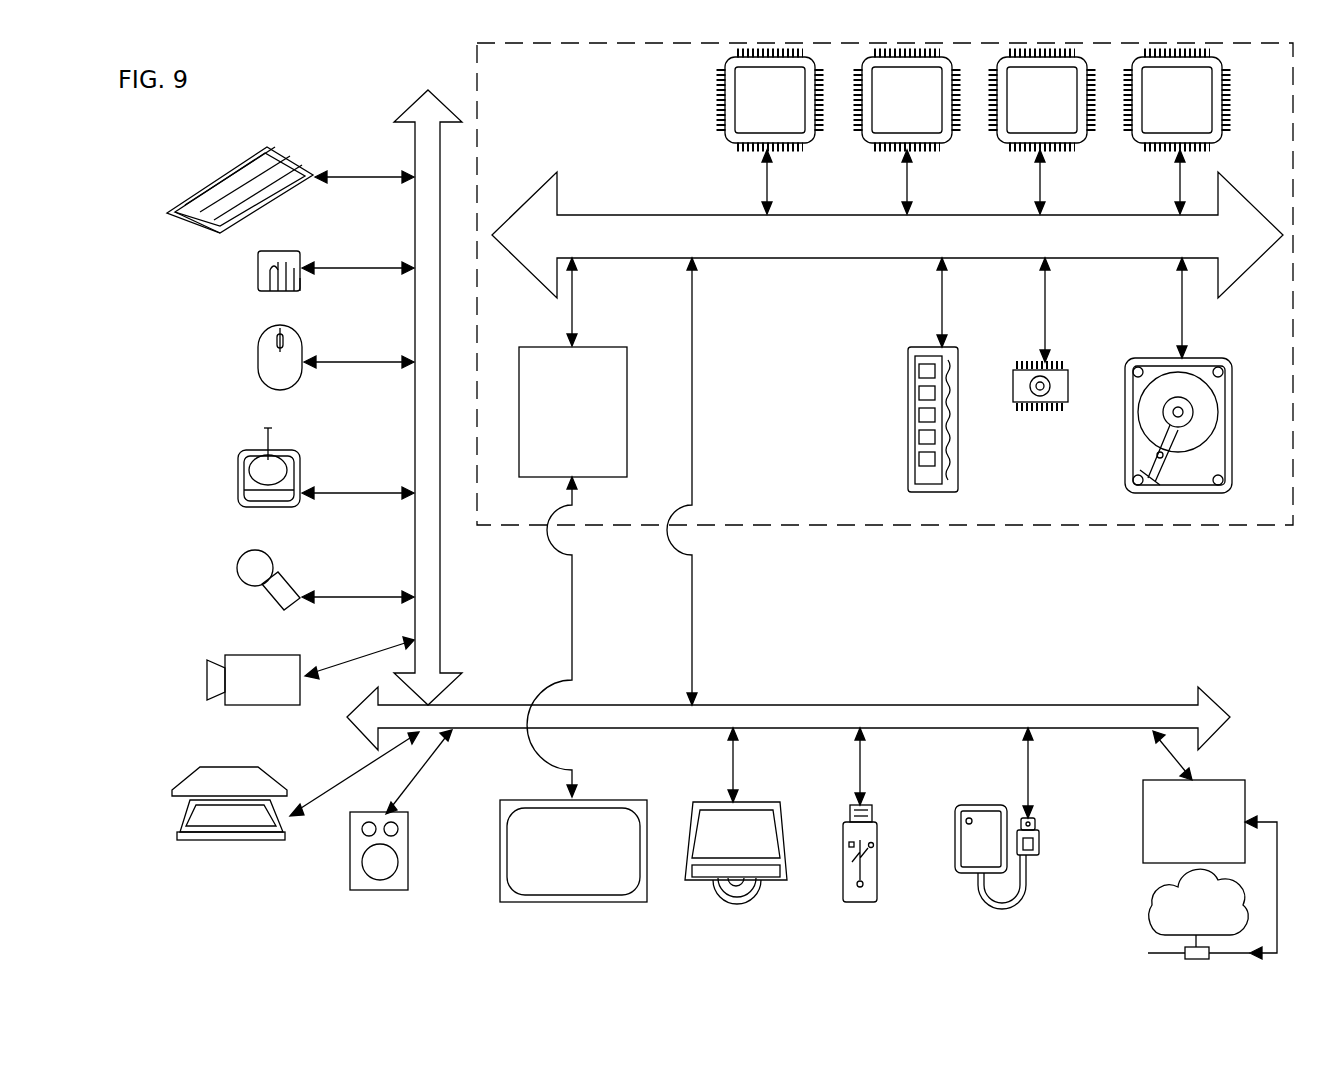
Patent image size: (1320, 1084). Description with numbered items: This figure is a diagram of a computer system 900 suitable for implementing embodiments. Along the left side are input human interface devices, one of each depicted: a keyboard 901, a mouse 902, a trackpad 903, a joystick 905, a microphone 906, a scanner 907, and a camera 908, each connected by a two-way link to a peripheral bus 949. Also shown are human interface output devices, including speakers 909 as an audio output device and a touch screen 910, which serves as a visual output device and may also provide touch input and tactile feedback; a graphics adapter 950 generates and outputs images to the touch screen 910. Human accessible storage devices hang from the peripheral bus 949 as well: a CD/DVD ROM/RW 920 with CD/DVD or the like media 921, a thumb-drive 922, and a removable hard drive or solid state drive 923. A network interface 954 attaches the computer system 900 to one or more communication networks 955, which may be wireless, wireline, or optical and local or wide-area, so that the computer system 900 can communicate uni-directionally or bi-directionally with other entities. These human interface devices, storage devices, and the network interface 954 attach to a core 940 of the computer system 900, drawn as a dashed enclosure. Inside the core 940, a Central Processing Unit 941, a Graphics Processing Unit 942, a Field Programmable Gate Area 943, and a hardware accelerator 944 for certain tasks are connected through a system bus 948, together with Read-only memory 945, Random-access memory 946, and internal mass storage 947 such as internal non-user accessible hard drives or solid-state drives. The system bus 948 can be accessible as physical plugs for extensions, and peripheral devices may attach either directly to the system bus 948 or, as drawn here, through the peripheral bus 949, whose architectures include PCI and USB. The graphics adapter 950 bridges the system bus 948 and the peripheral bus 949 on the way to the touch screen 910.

The computer system 900 is at (218, 122).
The keyboard 901 is at (172, 213).
The mouse 902 is at (258, 358).
The trackpad 903 is at (258, 275).
The joystick 905 is at (240, 492).
The microphone 906 is at (240, 570).
The scanner 907 is at (178, 826).
The camera 908 is at (210, 685).
The speakers 909 is at (378, 890).
The touch screen 910 is at (570, 902).
The CD/DVD ROM/RW 920 is at (770, 888).
The CD/DVD or the like media 921 is at (720, 892).
The thumb-drive 922 is at (860, 902).
The removable hard drive or solid state drive 923 is at (958, 880).
The core 940 is at (870, 525).
The Central Processing Unit (CPU) 941 is at (770, 133).
The Graphics Processing Unit (GPU) 942 is at (907, 133).
The Field Programmable Gate Area (FPGA) 943 is at (1042, 133).
The hardware accelerator 944 is at (1177, 133).
The Read-only memory (ROM) 945 is at (1032, 412).
The Random-access memory (RAM) 946 is at (908, 418).
The internal mass storage 947 is at (1140, 355).
The system bus 948 is at (887, 235).
The peripheral bus 949 is at (415, 124).
The graphics adapter 950 is at (608, 527).
The network interface 954 is at (1210, 845).
The communication network 955 is at (1152, 925).